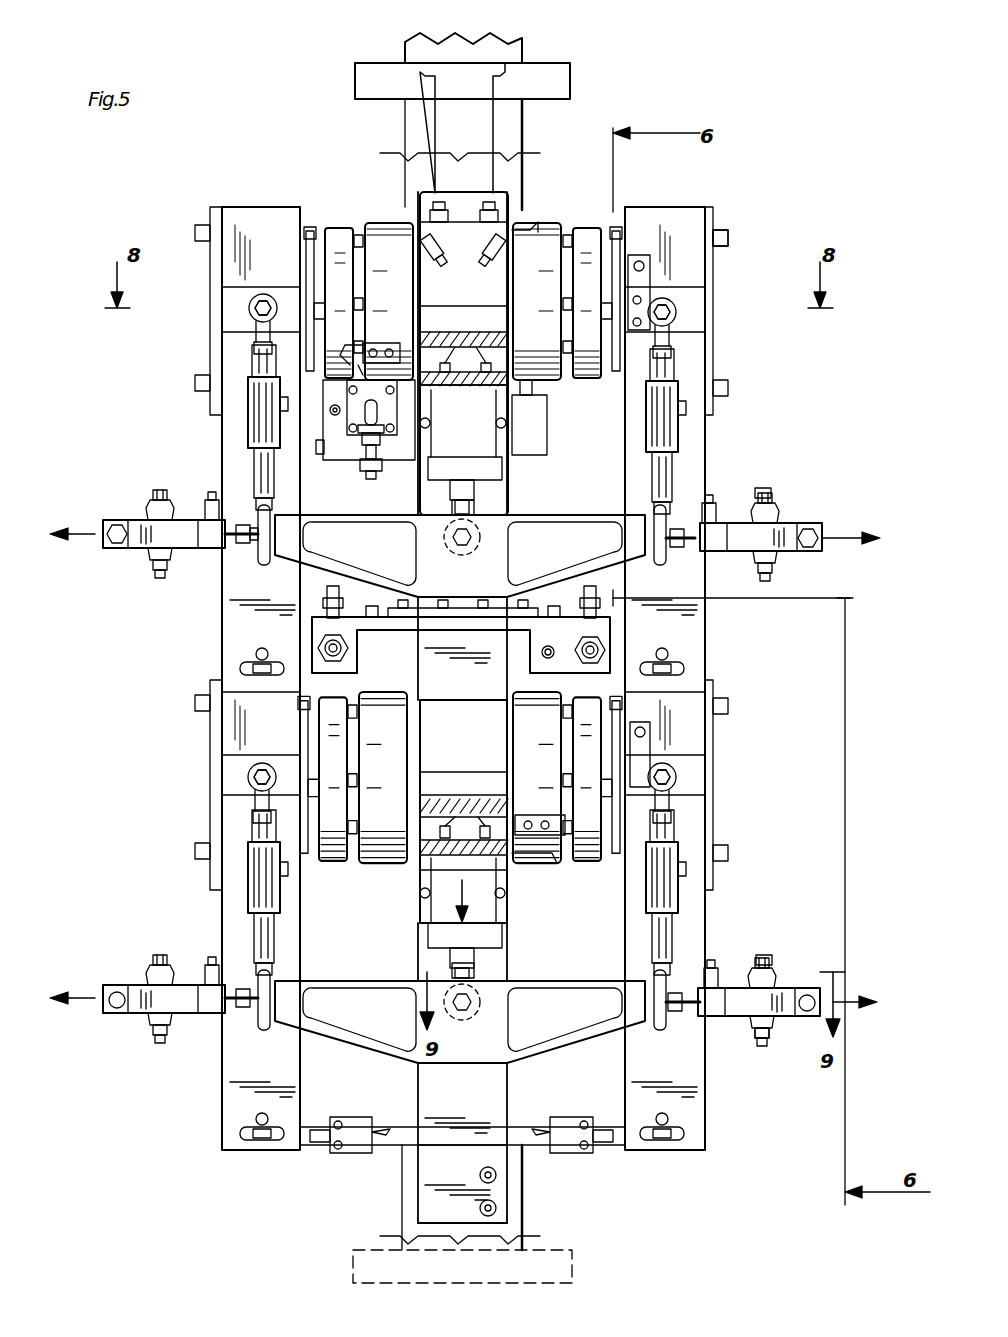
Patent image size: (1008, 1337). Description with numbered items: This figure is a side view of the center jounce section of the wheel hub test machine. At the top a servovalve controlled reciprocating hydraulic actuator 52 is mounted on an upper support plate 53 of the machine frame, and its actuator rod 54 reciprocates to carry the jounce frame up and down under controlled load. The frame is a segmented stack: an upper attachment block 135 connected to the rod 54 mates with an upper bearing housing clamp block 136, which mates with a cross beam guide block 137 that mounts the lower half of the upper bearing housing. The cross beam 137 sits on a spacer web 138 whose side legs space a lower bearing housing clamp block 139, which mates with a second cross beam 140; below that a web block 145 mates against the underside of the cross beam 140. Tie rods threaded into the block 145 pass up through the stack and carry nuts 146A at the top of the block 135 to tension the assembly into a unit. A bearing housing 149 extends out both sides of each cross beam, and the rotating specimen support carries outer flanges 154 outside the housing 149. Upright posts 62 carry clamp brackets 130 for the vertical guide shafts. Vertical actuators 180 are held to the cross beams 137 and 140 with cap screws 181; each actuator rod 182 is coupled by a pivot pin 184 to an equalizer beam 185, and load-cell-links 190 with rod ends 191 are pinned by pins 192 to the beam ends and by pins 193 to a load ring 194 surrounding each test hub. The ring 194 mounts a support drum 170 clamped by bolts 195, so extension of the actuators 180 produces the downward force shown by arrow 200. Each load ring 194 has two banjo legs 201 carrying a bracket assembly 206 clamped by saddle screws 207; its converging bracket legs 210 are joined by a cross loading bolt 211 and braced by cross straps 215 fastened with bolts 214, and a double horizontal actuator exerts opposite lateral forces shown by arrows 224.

The hydraulic actuator 52 is at (523, 47).
The upper support plate 53 is at (368, 58).
The actuator rod 54 is at (445, 113).
The post 62 is at (400, 1188).
The clamp bracket 130 is at (507, 1193).
The upper attachment block 135 is at (441, 572).
The upper bearing housing clamp block 136 is at (480, 287).
The cross beam guide block 137 is at (420, 326).
The spacer web 138 is at (490, 490).
The lower bearing housing clamp block 139 is at (482, 741).
The second cross beam 140 is at (506, 858).
The web block 145 is at (490, 973).
The nuts 146A is at (490, 235).
The bearing housing 149 is at (538, 226).
The outer flange 154 is at (340, 730).
The support drum 170 is at (466, 658).
The vertical actuator 180 is at (481, 415).
The cap screws 181 is at (452, 345).
The actuator rod 182 is at (485, 512).
The pivot pin 184 is at (460, 548).
The equalizer beam 185 is at (280, 560).
The load-cell-link 190 is at (258, 420).
The rod end 191 is at (263, 294).
The pin 192 is at (243, 524).
The pin 193 is at (251, 308).
The load ring 194 is at (255, 222).
The bolts 195 is at (729, 238).
The arrow 200 is at (455, 898).
The banjo legs 201 is at (228, 618).
The bracket assembly 206 is at (160, 516).
The screws 207 is at (243, 988).
The bracket legs 210 is at (752, 555).
The cross loading bolt 211 is at (115, 548).
The bolts 214 is at (763, 958).
The cross straps 215 is at (760, 1030).
The arrows 224 is at (75, 530).